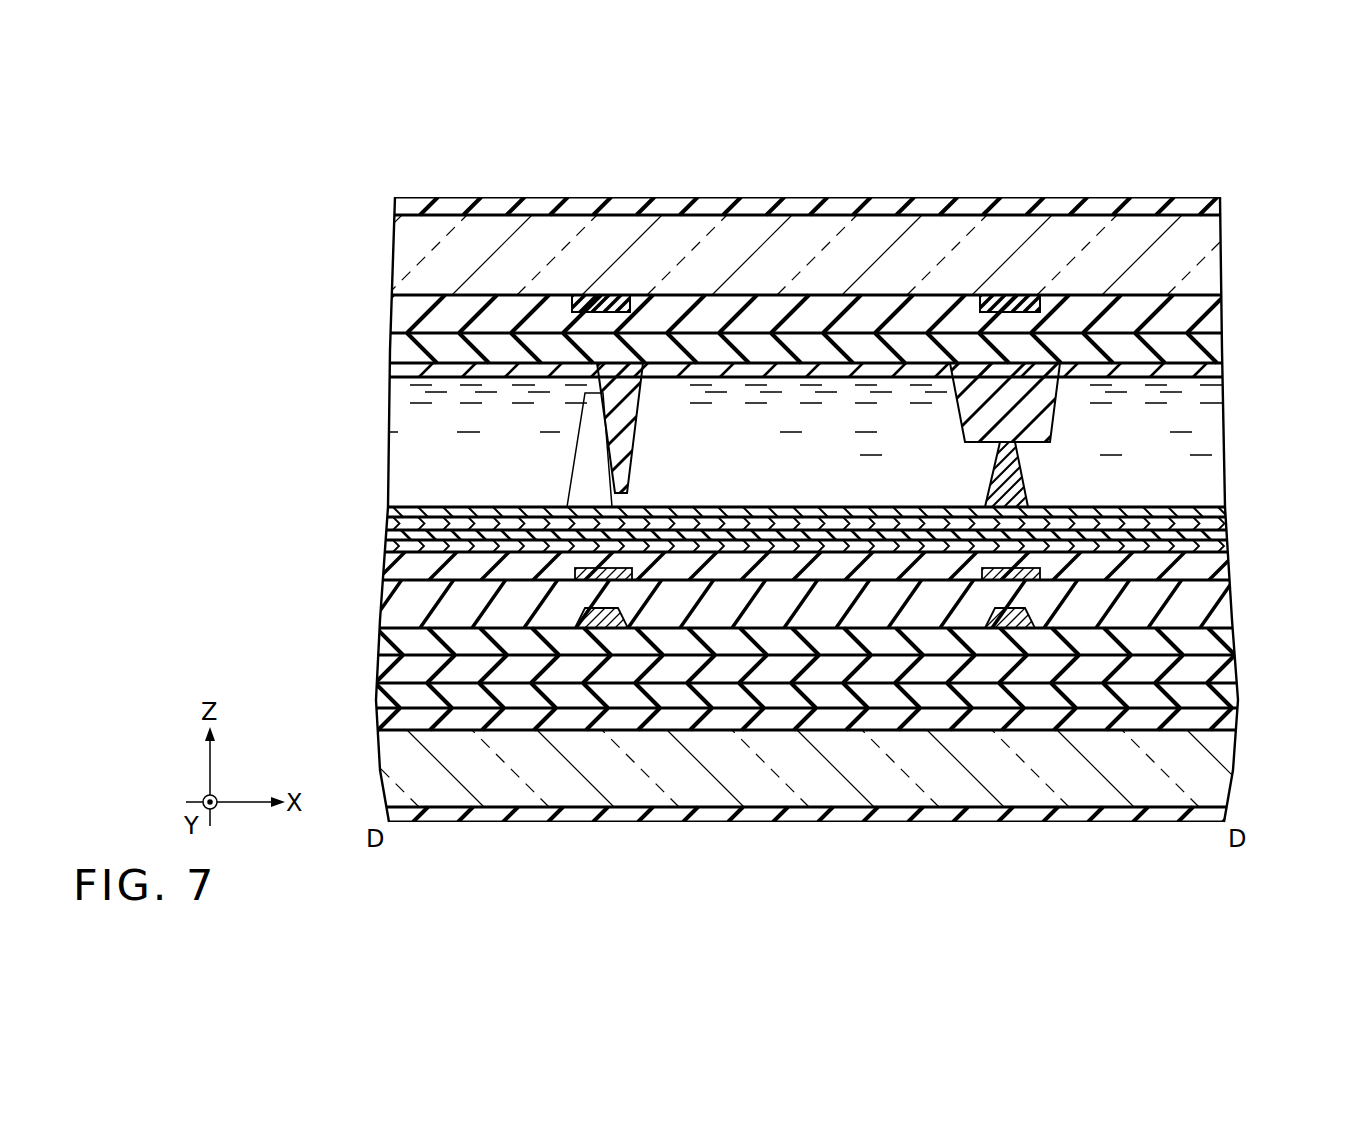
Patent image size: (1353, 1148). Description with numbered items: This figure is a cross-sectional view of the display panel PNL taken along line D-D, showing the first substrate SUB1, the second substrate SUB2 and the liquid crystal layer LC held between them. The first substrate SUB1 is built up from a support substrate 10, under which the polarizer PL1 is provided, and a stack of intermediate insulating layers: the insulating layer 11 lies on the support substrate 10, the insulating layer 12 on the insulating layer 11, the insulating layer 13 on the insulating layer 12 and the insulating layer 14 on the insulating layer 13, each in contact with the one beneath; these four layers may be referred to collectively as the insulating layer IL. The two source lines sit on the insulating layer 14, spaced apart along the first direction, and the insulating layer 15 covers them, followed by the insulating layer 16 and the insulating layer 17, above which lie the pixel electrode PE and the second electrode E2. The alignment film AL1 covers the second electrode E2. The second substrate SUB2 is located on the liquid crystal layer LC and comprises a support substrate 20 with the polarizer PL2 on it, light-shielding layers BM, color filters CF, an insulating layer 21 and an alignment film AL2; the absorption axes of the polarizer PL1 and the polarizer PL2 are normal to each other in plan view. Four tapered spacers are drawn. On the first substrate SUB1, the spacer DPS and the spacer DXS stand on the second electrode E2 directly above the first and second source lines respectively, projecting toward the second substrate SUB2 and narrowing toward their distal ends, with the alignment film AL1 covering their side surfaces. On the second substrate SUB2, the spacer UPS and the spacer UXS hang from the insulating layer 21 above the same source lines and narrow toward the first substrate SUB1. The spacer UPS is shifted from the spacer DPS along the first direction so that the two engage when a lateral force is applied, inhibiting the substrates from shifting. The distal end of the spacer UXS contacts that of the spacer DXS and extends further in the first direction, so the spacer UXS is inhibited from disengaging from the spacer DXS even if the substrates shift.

The display panel PNL is at (1071, 171).
The second substrate SUB2 is at (380, 246).
The first substrate SUB1 is at (364, 744).
The polarizer PL2 is at (1213, 207).
The support substrate 20 is at (1213, 258).
The color filter CF is at (510, 305).
The light-shielding layer BM is at (612, 312).
The insulating layer 21 is at (1213, 343).
The alignment film AL2 is at (1213, 372).
The liquid crystal layer LC is at (415, 452).
The spacer UPS is at (641, 451).
The spacer DPS is at (578, 468).
The spacer UXS is at (1062, 418).
The spacer DXS is at (983, 468).
The alignment film AL1 is at (1213, 509).
The pixel electrode PE is at (413, 550).
The second electrode E2 is at (482, 523).
The insulating layer 17 is at (1208, 540).
The insulating layer 16 is at (1213, 566).
The insulating layer 15 is at (1218, 600).
The insulating layer 14 is at (1218, 643).
The insulating layer 13 is at (1218, 671).
The insulating layer 12 is at (1218, 698).
The insulating layer 11 is at (1218, 727).
The insulating layer IL is at (1288, 623).
The support substrate 10 is at (1218, 775).
The polarizer PL1 is at (1213, 814).